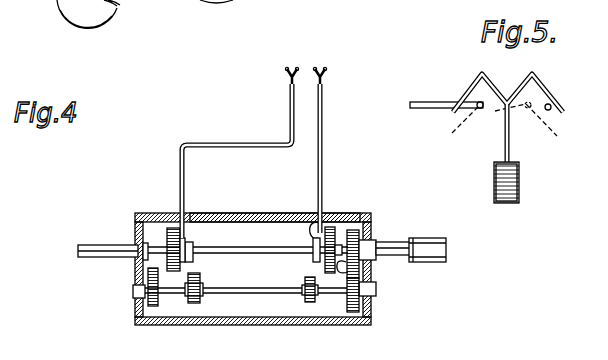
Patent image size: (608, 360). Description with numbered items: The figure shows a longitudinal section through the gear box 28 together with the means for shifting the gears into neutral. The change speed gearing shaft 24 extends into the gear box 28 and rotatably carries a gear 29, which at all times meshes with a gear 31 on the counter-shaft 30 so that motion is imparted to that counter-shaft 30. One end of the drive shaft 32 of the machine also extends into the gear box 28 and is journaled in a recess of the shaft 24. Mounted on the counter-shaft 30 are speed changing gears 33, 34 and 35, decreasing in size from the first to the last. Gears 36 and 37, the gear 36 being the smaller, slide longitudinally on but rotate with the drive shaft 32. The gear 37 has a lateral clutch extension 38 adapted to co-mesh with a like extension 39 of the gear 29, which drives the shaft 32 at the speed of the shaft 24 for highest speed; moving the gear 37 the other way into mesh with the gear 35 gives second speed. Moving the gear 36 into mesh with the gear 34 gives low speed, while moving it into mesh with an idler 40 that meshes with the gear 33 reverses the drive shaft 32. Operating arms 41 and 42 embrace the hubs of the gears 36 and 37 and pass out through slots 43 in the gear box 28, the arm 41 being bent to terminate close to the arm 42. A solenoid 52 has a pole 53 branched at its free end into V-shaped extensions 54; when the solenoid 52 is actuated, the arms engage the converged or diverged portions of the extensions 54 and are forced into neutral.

In FIG. 4, the change speed gearing shaft 24 is at (398, 240).
In FIG. 4, the gear box 28 is at (289, 320).
In FIG. 4, the gear 29 is at (357, 230).
In FIG. 4, the counter-shaft 30 is at (247, 295).
In FIG. 4, the gear 31 is at (347, 297).
In FIG. 4, the drive shaft 32 is at (90, 248).
In FIG. 4, the speed changing gear 33 is at (135, 302).
In FIG. 4, the speed changing gear 34 is at (203, 285).
In FIG. 4, the speed changing gear 35 is at (307, 281).
In FIG. 4, the gear 36 is at (172, 228).
In FIG. 4, the gear 37 is at (313, 222).
In FIG. 4, the lateral clutch extension 38 is at (337, 227).
In FIG. 4, the extension 39 is at (368, 273).
In FIG. 4, the idler 40 is at (147, 274).
In FIG. 4, the operating arm 41 is at (185, 163).
In FIG. 5, the operating arm 41 is at (425, 102).
In FIG. 4, the operating arm 42 is at (322, 132).
In FIG. 5, the operating arm 42 is at (559, 108).
In FIG. 4, the slot 43 is at (206, 216).
In FIG. 5, the solenoid 52 is at (520, 181).
In FIG. 5, the pole 53 is at (510, 141).
In FIG. 5, the extension 54 is at (547, 94).